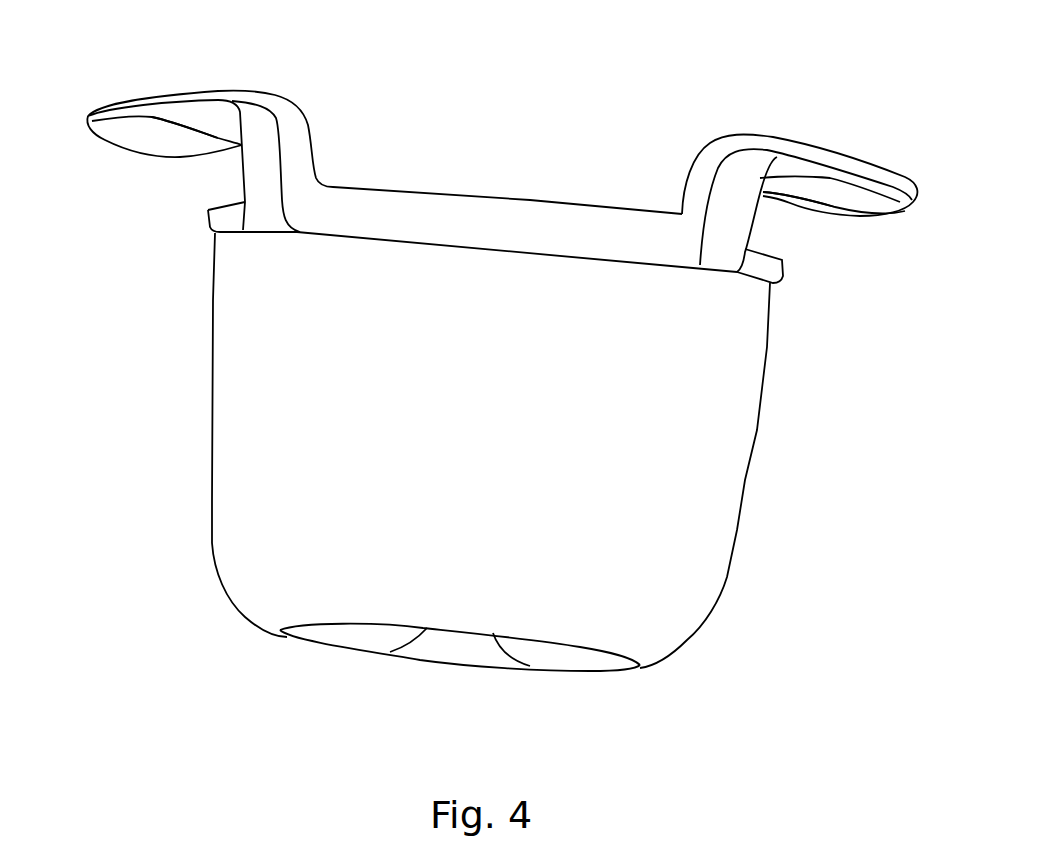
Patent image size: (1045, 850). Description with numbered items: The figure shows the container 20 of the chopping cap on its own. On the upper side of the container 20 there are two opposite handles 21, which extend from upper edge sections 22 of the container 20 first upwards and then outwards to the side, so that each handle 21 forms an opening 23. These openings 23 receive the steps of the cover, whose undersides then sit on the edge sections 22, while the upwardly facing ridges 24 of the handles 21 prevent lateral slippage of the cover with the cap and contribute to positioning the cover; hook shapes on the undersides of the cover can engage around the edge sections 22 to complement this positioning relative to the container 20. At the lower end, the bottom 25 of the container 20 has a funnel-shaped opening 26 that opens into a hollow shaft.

The container 20 is at (160, 321).
The handle 21 is at (152, 73).
The upper edge section 22 is at (222, 203).
The opening 23 is at (208, 120).
The upwardly facing ridge 24 is at (300, 152).
The bottom 25 is at (593, 668).
The funnel-shaped opening 26 is at (440, 643).